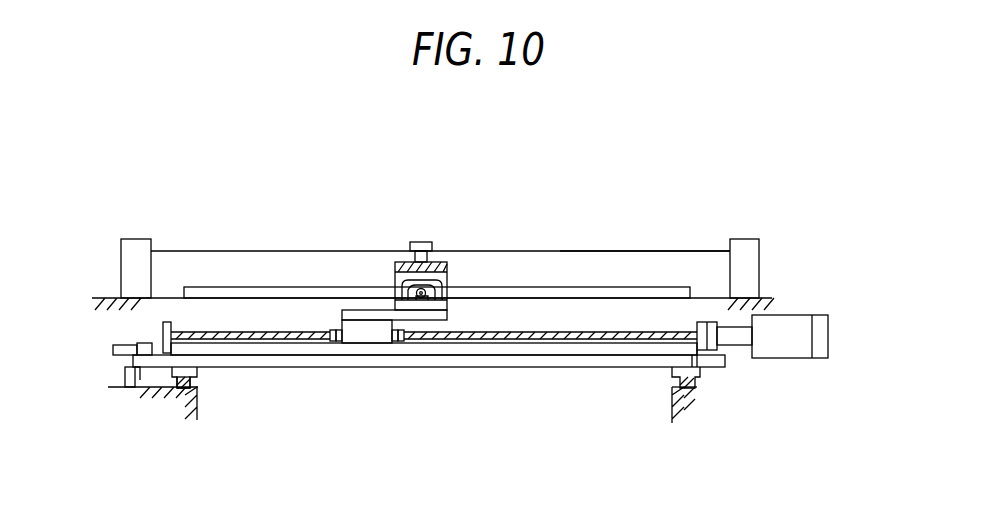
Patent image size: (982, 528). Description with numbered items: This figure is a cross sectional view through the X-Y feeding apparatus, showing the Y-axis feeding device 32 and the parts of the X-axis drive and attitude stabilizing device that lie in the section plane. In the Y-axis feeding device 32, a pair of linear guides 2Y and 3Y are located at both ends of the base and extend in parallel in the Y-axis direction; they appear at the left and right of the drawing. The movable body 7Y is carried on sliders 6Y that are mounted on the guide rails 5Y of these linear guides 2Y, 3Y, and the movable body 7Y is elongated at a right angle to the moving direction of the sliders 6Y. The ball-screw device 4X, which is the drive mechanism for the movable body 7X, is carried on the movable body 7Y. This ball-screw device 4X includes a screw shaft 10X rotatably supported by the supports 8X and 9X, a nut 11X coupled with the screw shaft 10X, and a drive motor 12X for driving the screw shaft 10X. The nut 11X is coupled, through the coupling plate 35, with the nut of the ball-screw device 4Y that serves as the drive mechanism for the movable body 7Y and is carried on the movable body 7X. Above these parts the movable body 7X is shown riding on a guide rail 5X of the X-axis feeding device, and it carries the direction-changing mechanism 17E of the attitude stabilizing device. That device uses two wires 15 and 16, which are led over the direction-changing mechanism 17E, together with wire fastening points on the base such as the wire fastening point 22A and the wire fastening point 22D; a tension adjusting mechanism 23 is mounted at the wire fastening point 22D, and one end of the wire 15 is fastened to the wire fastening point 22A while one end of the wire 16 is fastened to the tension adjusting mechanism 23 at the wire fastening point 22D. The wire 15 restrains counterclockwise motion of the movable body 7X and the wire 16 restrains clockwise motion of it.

The wire fastening point 22A is at (135, 296).
The wire 15 is at (263, 251).
The wire 16 is at (581, 250).
The guide rail 5X is at (584, 287).
The tension adjusting mechanism 23 is at (741, 254).
The wire fastening point 22D is at (744, 296).
The ball-screw device 4Y is at (442, 230).
The movable body 7X is at (408, 262).
The direction-changing mechanism 17E is at (450, 278).
The coupling plate 35 is at (355, 310).
The screw shaft 10X is at (327, 342).
The nut 11X is at (378, 342).
The support 8X is at (172, 325).
The ball-screw device 4X is at (571, 340).
The support 9X is at (697, 323).
The drive motor 12X is at (800, 325).
The movable body 7Y is at (507, 362).
The Y-axis feeding device 32 is at (435, 344).
The slider 6Y is at (197, 374).
The linear guide 2Y is at (203, 387).
The guide rail 5Y is at (198, 390).
The linear guide 3Y is at (705, 387).